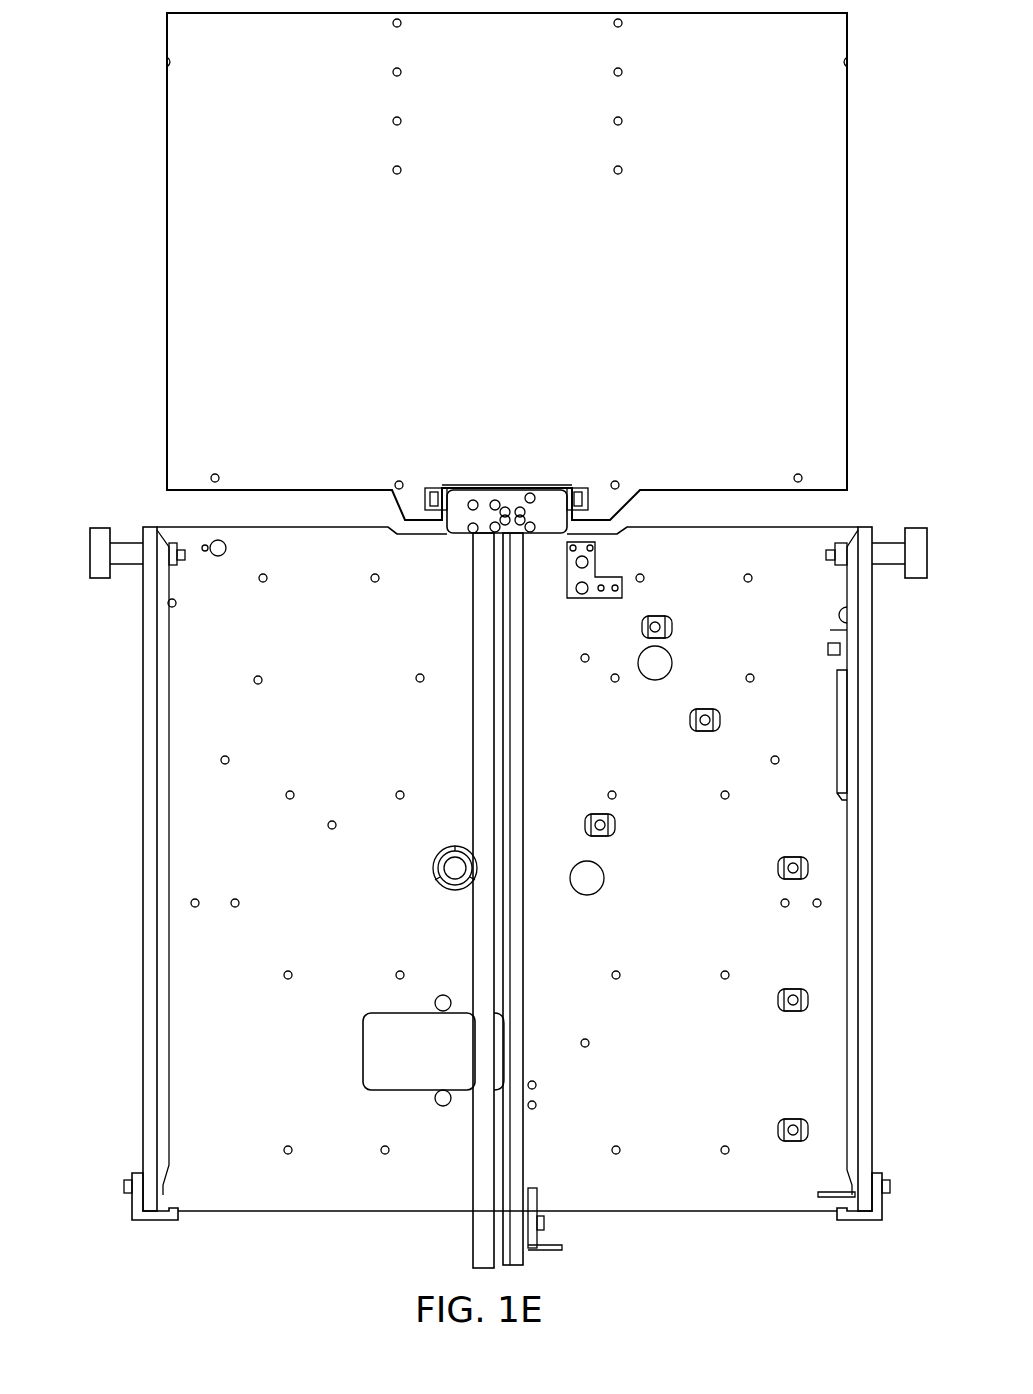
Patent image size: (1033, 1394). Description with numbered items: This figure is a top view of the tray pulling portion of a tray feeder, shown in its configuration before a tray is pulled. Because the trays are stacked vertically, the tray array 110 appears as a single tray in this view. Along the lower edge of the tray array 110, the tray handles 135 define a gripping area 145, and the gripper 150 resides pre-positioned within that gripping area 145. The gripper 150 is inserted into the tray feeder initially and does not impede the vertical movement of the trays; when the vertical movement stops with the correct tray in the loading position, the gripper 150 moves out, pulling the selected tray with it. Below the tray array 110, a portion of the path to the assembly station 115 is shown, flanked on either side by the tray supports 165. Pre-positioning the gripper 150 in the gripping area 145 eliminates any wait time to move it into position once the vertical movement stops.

The tray array 110 is at (270, 328).
The tray handles 135 is at (385, 500).
The gripper 150 is at (530, 465).
The gripping area 145 is at (575, 465).
The path to assembly station 115 is at (282, 772).
The tray supports 165 is at (843, 1055).